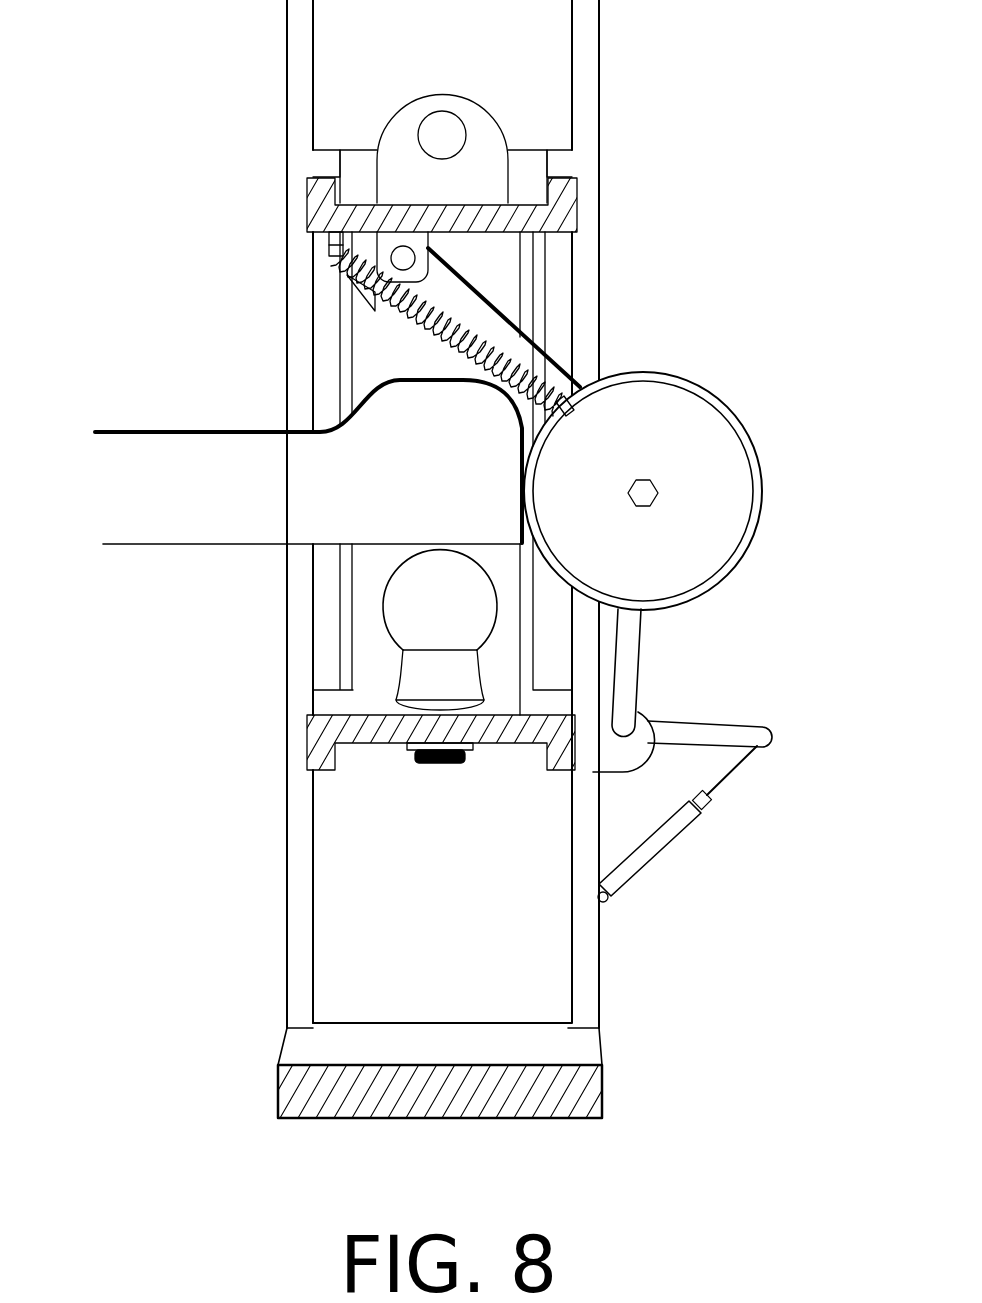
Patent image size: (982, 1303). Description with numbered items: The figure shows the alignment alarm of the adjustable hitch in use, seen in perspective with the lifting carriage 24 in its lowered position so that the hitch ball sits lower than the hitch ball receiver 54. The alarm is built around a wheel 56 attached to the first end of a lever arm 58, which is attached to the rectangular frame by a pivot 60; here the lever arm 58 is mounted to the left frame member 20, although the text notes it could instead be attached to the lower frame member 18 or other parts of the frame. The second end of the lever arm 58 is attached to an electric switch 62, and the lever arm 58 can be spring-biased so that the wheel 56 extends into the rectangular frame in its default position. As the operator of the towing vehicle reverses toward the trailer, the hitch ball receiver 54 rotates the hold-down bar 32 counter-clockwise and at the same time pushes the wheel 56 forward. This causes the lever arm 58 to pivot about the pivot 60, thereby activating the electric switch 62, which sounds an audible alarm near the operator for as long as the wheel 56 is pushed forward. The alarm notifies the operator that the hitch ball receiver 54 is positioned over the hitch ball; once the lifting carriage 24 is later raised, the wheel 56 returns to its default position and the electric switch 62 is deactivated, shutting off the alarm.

The lower frame member 18 is at (308, 1088).
The left frame member 20 is at (287, 327).
The lifting carriage 24 is at (573, 212).
The hold-down bar 32 is at (537, 367).
The hitch ball receiver 54 is at (237, 497).
The wheel 56 is at (675, 532).
The lever arm 58 is at (627, 688).
The pivot 60 is at (637, 733).
The electric switch 62 is at (643, 847).